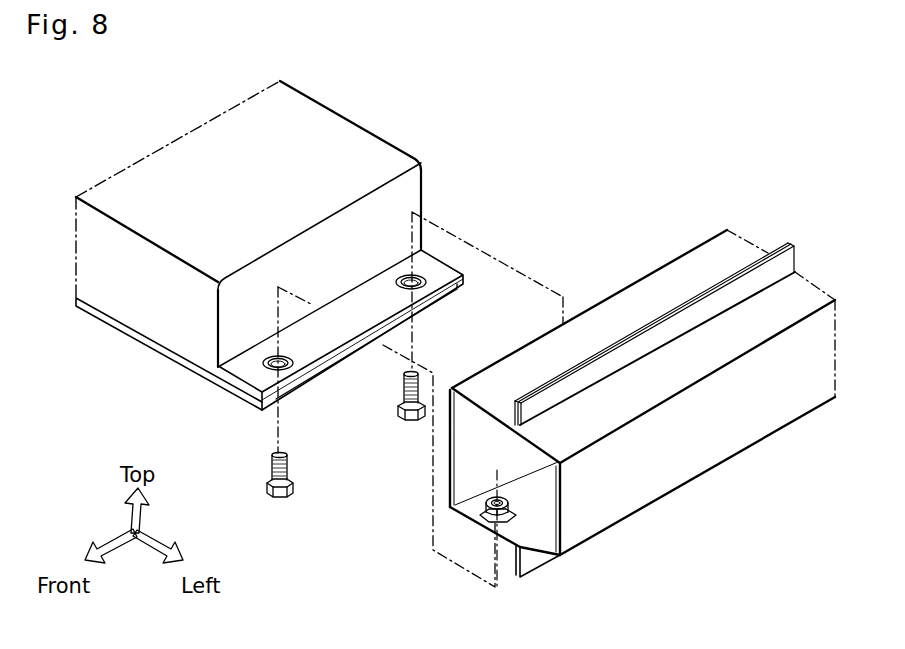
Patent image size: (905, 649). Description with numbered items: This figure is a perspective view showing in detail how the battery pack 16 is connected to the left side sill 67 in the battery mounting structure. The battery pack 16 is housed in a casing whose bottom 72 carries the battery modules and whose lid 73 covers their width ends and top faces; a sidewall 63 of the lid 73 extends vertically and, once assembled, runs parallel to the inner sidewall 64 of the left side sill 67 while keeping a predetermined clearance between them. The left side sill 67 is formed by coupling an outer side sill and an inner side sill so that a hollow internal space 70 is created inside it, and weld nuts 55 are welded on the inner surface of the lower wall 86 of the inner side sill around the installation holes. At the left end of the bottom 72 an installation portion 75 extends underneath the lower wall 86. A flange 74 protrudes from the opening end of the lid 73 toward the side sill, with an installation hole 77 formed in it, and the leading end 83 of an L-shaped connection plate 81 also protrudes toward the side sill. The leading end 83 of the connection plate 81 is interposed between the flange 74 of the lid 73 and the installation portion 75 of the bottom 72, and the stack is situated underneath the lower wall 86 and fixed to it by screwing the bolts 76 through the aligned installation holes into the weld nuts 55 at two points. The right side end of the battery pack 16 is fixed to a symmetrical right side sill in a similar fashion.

The battery pack 16 is at (287, 210).
The lid 73 is at (285, 115).
The sidewall of the lid 63 is at (410, 188).
The bottom 72 is at (127, 337).
The installation portion 75 is at (256, 404).
The flange 74 is at (360, 322).
The leading end of the connection plate 83 is at (438, 302).
The connection plate 81 is at (342, 378).
The installation hole 77 is at (403, 277).
The bolt 76 is at (270, 498).
The left side sill 67 is at (606, 395).
The inner sidewall of the left side sill 64 is at (450, 457).
The hollow internal space 70 is at (468, 421).
The weld nut 55 is at (507, 504).
The lower wall of the inner side sill 86 is at (465, 530).